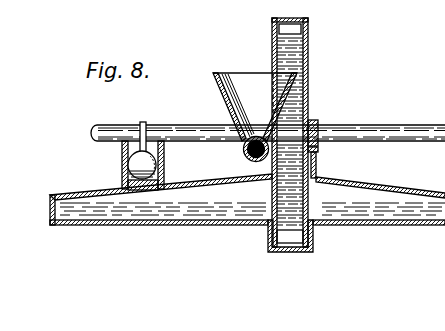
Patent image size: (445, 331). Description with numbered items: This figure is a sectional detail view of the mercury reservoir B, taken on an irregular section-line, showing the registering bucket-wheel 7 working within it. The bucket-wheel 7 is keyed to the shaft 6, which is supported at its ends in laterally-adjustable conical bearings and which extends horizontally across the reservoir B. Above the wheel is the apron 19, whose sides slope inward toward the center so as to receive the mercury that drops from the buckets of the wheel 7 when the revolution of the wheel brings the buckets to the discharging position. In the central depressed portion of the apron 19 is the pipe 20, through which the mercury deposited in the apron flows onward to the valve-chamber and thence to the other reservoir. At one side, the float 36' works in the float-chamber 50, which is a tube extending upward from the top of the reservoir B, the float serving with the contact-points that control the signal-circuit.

The registering bucket-wheel 7 is at (309, 46).
The apron 19 is at (255, 107).
The pipe 20 is at (246, 158).
The shaft 6 is at (406, 127).
The float-chamber 50 is at (164, 152).
The float 36' is at (116, 165).
The reservoir B is at (408, 190).